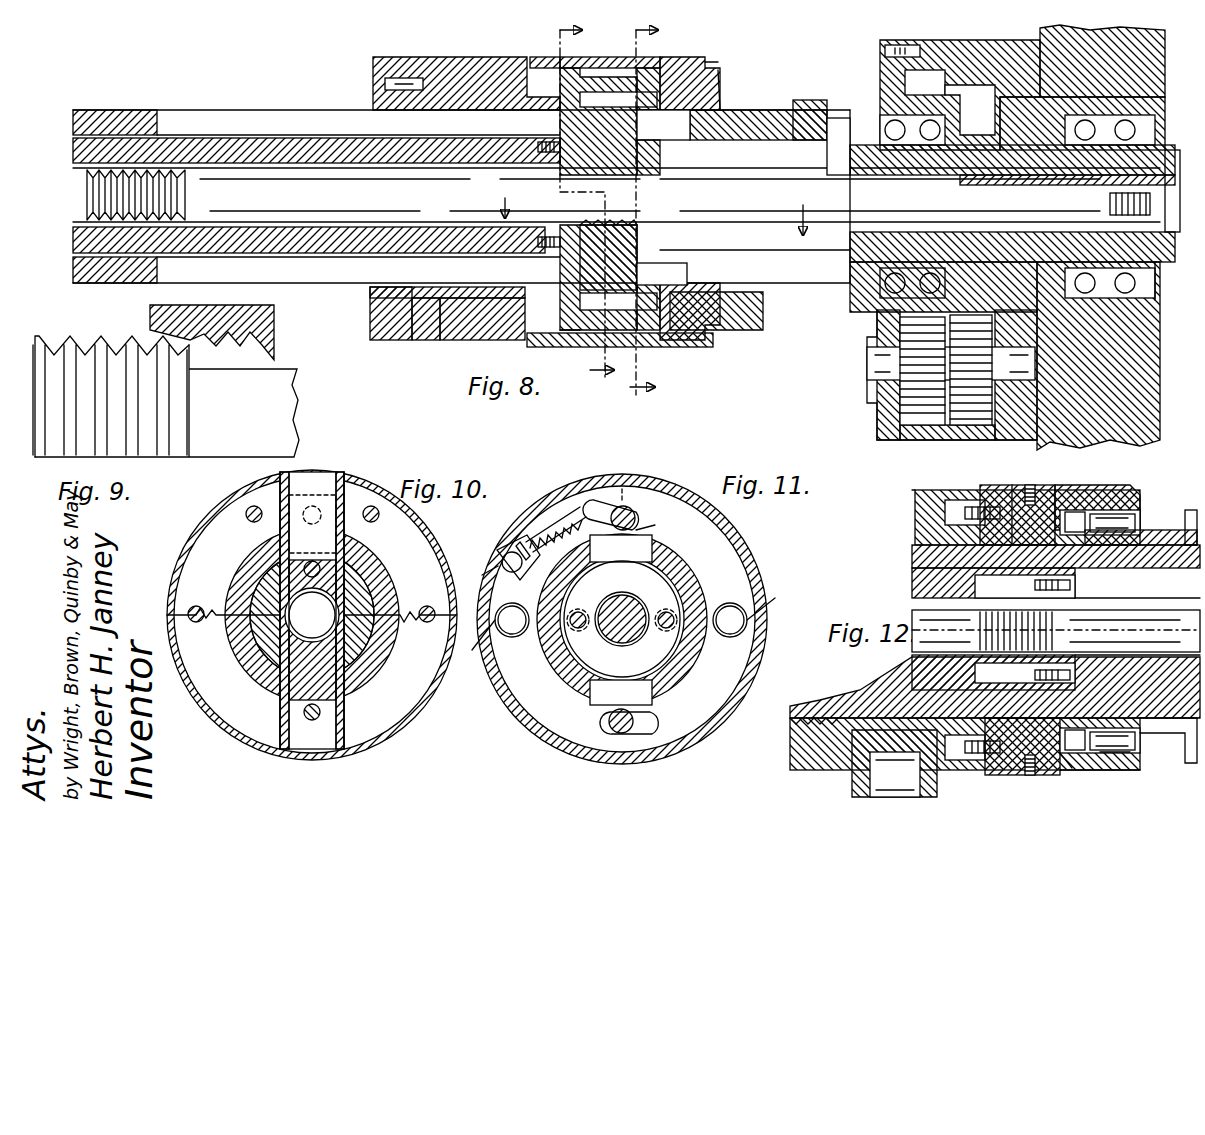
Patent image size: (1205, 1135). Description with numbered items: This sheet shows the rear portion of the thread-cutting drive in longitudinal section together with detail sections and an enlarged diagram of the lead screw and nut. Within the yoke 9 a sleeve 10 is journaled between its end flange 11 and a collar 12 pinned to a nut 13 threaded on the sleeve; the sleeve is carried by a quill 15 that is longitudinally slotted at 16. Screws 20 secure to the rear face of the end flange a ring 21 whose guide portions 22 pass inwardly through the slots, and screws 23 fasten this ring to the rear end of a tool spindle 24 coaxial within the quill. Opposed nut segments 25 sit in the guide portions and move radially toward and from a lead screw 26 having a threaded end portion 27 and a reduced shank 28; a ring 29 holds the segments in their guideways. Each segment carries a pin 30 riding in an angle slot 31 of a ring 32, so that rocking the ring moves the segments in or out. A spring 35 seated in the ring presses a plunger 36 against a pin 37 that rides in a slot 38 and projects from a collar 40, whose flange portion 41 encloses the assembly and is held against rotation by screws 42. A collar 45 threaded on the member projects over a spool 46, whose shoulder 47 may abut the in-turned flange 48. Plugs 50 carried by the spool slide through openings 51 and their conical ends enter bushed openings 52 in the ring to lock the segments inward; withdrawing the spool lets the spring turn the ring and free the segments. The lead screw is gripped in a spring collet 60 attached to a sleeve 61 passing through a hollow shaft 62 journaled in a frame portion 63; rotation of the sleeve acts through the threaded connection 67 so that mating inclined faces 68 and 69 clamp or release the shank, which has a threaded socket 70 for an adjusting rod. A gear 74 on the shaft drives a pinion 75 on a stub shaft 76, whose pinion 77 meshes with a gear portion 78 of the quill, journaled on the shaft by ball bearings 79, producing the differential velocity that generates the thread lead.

In FIG. 8, the yoke 9 is at (450, 57).
In FIG. 12, the yoke 9 is at (917, 502).
In FIG. 8, the sleeve 10 is at (466, 356).
In FIG. 12, the sleeve 10 is at (800, 738).
In FIG. 8, the end flange 11 is at (544, 347).
In FIG. 12, the end flange 11 is at (915, 492).
In FIG. 8, the collar 12 is at (416, 362).
In FIG. 8, the nut 13 is at (372, 334).
In FIG. 8, the quill 15 is at (130, 112).
In FIG. 10, the quill 15 is at (380, 655).
In FIG. 12, the quill 15 is at (912, 556).
In FIG. 8, the slots 16 is at (322, 112).
In FIG. 10, the slots 16 is at (345, 560).
In FIG. 8, the screws 20 is at (540, 57).
In FIG. 10, the screws 20 is at (254, 506).
In FIG. 12, the screws 20 is at (958, 500).
In FIG. 8, the ring 21 is at (573, 332).
In FIG. 10, the ring 21 is at (206, 530).
In FIG. 12, the ring 21 is at (1015, 495).
In FIG. 10, the guide portions 22 is at (250, 555).
In FIG. 12, the guide portions 22 is at (1056, 631).
In FIG. 8, the screws 23 is at (540, 147).
In FIG. 10, the screws 23 is at (312, 561).
In FIG. 8, the tool spindle 24 is at (282, 140).
In FIG. 10, the tool spindle 24 is at (370, 606).
In FIG. 12, the tool spindle 24 is at (930, 588).
In FIG. 8, the nut segments 25 is at (625, 243).
In FIG. 9, the nut segments 25 is at (150, 316).
In FIG. 10, the nut segments 25 is at (340, 540).
In FIG. 12, the nut segments 25 is at (1058, 630).
In FIG. 8, the lead screw 26 is at (232, 170).
In FIG. 9, the lead screw 26 is at (280, 440).
In FIG. 10, the lead screw 26 is at (290, 640).
In FIG. 11, the lead screw 26 is at (612, 632).
In FIG. 8, the threaded end portion 27 is at (178, 170).
In FIG. 9, the threaded end portion 27 is at (70, 340).
In FIG. 8, the shank 28 is at (736, 196).
In FIG. 12, the shank 28 is at (1158, 622).
In FIG. 8, the ring 29 is at (640, 170).
In FIG. 11, the ring 29 is at (646, 580).
In FIG. 12, the ring 29 is at (1070, 598).
In FIG. 8, the pins 30 is at (580, 124).
In FIG. 10, the pins 30 is at (316, 475).
In FIG. 11, the pins 30 is at (630, 508).
In FIG. 8, the angle slots 31 is at (663, 197).
In FIG. 11, the angle slots 31 is at (652, 722).
In FIG. 8, the ring 32 is at (648, 72).
In FIG. 11, the ring 32 is at (712, 567).
In FIG. 12, the ring 32 is at (1071, 775).
In FIG. 11, the spring 35 is at (552, 505).
In FIG. 11, the plunger 36 is at (522, 540).
In FIG. 11, the pin 37 is at (502, 558).
In FIG. 11, the slot 38 is at (479, 575).
In FIG. 8, the collar 40 is at (672, 348).
In FIG. 10, the collar 40 is at (345, 478).
In FIG. 11, the collar 40 is at (622, 500).
In FIG. 12, the collar 40 is at (1000, 486).
In FIG. 8, the flange portion 41 is at (607, 57).
In FIG. 11, the flange portion 41 is at (766, 646).
In FIG. 12, the screws 42 is at (1030, 486).
In FIG. 8, the collar 45 is at (712, 62).
In FIG. 12, the collar 45 is at (1138, 490).
In FIG. 8, the spool 46 is at (720, 102).
In FIG. 12, the spool 46 is at (1156, 732).
In FIG. 8, the annular external shoulder 47 is at (698, 60).
In FIG. 12, the annular external shoulder 47 is at (1108, 770).
In FIG. 8, the in-turned flange 48 is at (720, 72).
In FIG. 12, the in-turned flange 48 is at (1130, 770).
In FIG. 11, the plugs 50 is at (512, 628).
In FIG. 12, the plugs 50 is at (1128, 520).
In FIG. 12, the openings 51 is at (1078, 512).
In FIG. 11, the bushed openings 52 is at (630, 633).
In FIG. 12, the bushed openings 52 is at (1070, 510).
In FIG. 8, the spring collet 60 is at (858, 250).
In FIG. 8, the sleeve 61 is at (1165, 268).
In FIG. 8, the hollow shaft 62 is at (1165, 150).
In FIG. 8, the frame portion 63 is at (1148, 68).
In FIG. 8, the threaded connection 67 is at (995, 178).
In FIG. 8, the inclined face 68 is at (848, 172).
In FIG. 8, the inclined face 69 is at (838, 146).
In FIG. 8, the threaded socket 70 is at (1143, 202).
In FIG. 8, the gear 74 is at (968, 93).
In FIG. 8, the pinion 75 is at (945, 430).
In FIG. 8, the stub shaft 76 is at (868, 365).
In FIG. 8, the pinion 77 is at (912, 400).
In FIG. 8, the gear portion 78 is at (918, 85).
In FIG. 8, the ball bearings 79 is at (888, 128).